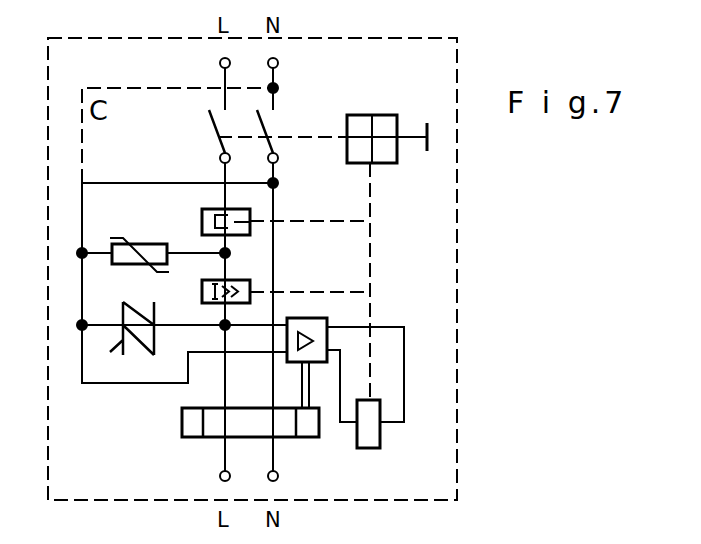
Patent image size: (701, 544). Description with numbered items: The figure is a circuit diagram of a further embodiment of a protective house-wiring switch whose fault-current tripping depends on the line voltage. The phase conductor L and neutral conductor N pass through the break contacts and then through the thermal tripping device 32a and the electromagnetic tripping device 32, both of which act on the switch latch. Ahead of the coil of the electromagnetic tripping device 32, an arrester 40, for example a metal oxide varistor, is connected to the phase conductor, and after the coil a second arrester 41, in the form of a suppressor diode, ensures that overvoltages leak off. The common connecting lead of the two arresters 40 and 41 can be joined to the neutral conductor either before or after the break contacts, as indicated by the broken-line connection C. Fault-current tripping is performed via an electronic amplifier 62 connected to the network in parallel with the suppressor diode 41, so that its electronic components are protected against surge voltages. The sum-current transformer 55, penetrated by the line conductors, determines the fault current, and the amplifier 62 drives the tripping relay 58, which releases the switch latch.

The thermal tripping device 32a is at (252, 211).
The electromagnetic tripping device 32 is at (252, 283).
The arrester 40 is at (118, 267).
The arrester 41 is at (121, 338).
The electronic amplifier 62 is at (318, 323).
The tripping relay 58 is at (372, 433).
The sum-current transformer 55 is at (188, 428).